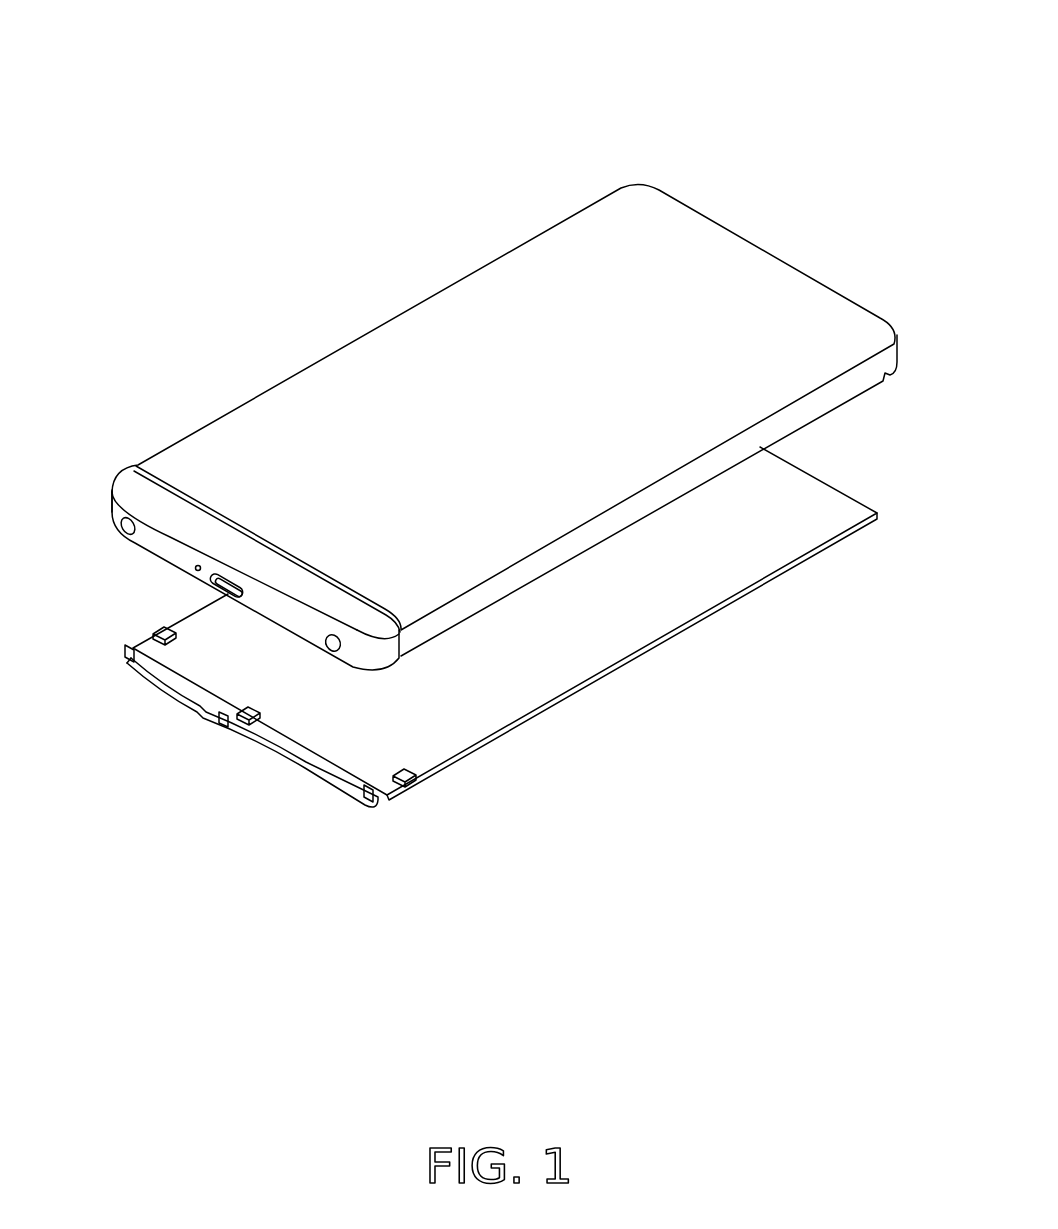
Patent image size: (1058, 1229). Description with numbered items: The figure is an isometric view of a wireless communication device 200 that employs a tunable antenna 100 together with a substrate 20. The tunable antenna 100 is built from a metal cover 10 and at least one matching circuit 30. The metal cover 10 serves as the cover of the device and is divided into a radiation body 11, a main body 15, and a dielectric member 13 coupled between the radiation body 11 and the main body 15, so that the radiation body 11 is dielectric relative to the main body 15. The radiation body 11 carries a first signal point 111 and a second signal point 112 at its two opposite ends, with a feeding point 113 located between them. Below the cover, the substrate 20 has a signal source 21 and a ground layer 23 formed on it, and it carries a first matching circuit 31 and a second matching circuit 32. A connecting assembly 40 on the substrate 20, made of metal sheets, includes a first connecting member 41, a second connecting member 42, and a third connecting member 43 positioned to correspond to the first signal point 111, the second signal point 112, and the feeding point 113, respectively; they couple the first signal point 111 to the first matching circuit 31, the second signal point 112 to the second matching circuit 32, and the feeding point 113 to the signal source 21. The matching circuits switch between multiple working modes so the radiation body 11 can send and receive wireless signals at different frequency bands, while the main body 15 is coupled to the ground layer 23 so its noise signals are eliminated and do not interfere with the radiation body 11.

The wireless communication device 200 is at (487, 36).
The tunable antenna 100 is at (365, 838).
The metal cover 10 is at (225, 344).
The radiation body 11 is at (112, 485).
The first signal point 111 is at (120, 483).
The second signal point 112 is at (380, 630).
The curved portion 113 is at (257, 560).
The dielectric member 13 is at (190, 492).
The main body 15 is at (238, 437).
The substrate 20 is at (646, 645).
The ground layer 23 is at (810, 497).
The signal source 21 is at (240, 722).
The matching circuit 30 is at (529, 803).
The first matching circuit 31 is at (178, 638).
The second matching circuit 32 is at (420, 785).
The connecting assembly 40 is at (161, 846).
The first tab 41 is at (130, 666).
The second connecting member 42 is at (373, 806).
The third connecting member 43 is at (220, 719).